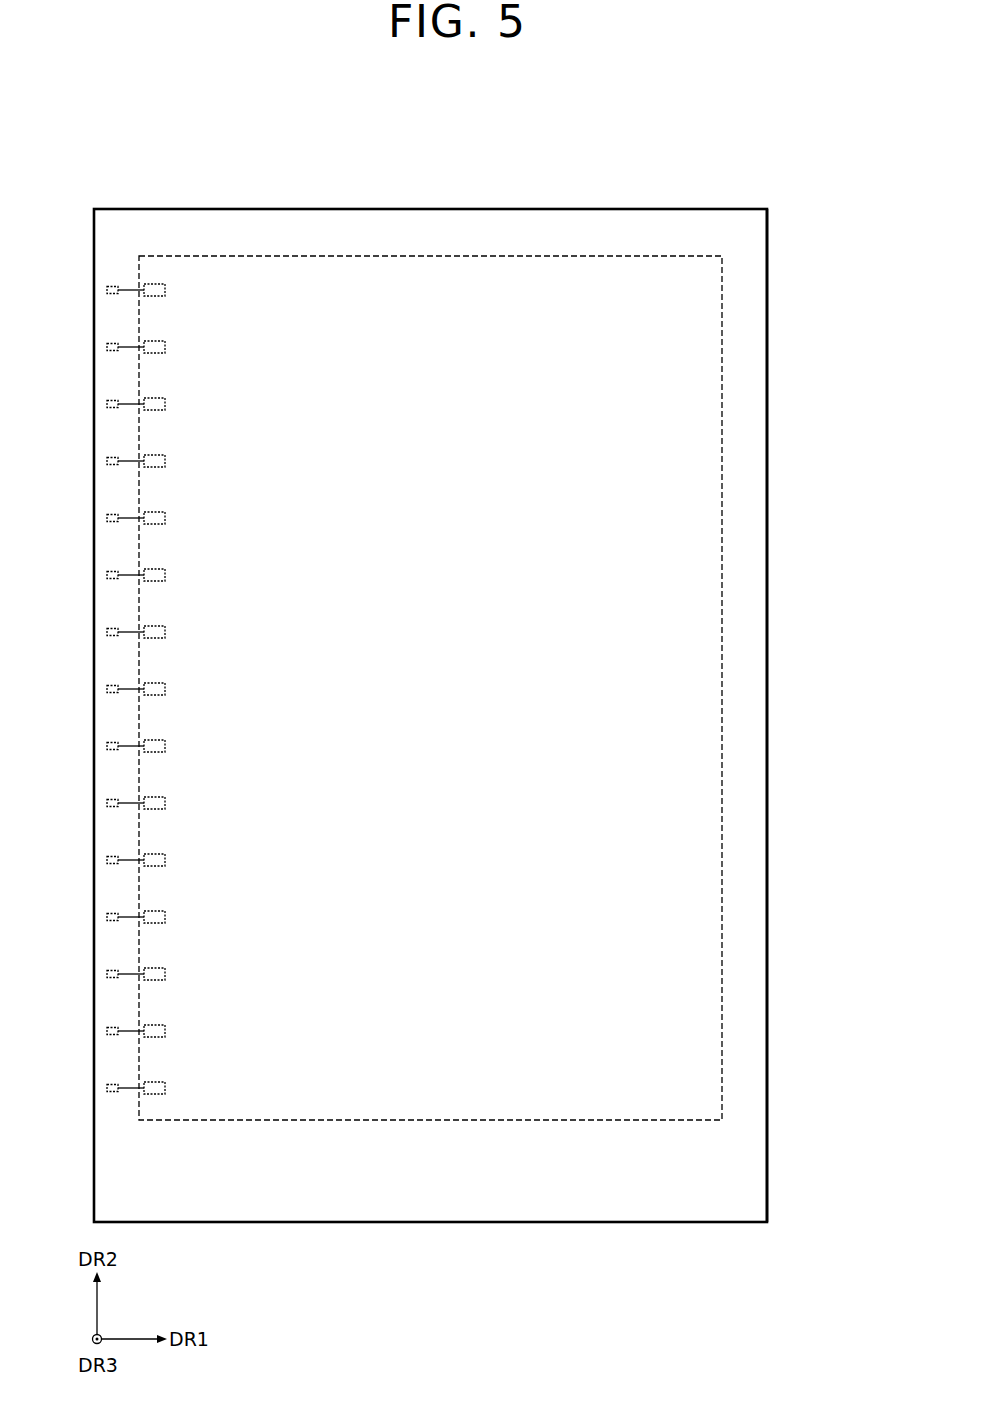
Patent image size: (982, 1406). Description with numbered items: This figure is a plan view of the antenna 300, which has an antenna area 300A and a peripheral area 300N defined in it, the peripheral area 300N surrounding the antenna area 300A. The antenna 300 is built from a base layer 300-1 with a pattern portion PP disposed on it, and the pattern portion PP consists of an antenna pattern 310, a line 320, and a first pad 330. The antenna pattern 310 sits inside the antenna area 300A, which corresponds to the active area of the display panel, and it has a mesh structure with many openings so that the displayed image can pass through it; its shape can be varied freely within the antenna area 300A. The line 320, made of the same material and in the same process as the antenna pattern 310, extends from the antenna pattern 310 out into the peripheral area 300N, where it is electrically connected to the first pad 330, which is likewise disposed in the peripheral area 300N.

The antenna 300 is at (733, 124).
The antenna area 300A is at (722, 480).
The peripheral area 300N is at (744, 521).
The base layer 300-1 is at (767, 560).
The antenna pattern 310 is at (155, 284).
The line 320 is at (128, 289).
The first pad 330 is at (113, 285).
The pattern portion PP is at (207, 141).